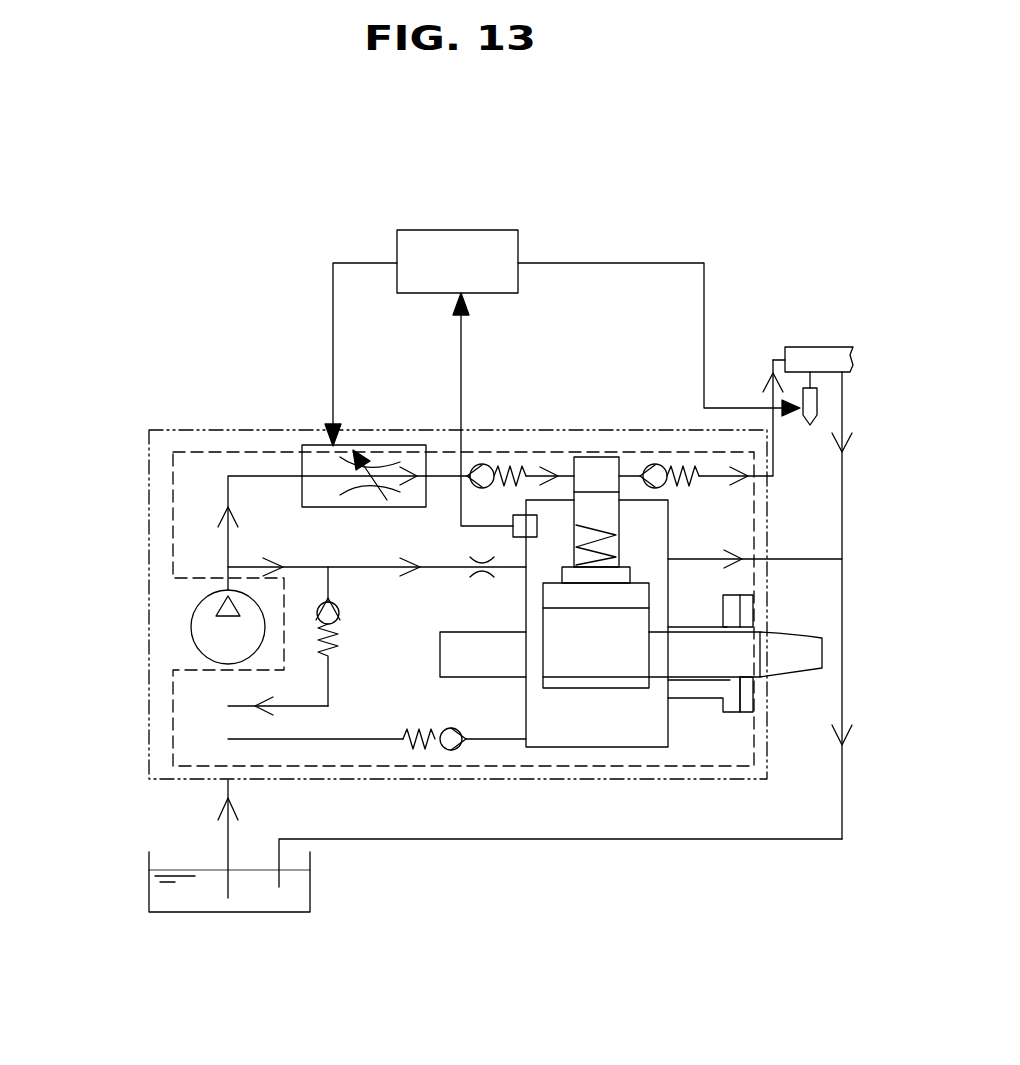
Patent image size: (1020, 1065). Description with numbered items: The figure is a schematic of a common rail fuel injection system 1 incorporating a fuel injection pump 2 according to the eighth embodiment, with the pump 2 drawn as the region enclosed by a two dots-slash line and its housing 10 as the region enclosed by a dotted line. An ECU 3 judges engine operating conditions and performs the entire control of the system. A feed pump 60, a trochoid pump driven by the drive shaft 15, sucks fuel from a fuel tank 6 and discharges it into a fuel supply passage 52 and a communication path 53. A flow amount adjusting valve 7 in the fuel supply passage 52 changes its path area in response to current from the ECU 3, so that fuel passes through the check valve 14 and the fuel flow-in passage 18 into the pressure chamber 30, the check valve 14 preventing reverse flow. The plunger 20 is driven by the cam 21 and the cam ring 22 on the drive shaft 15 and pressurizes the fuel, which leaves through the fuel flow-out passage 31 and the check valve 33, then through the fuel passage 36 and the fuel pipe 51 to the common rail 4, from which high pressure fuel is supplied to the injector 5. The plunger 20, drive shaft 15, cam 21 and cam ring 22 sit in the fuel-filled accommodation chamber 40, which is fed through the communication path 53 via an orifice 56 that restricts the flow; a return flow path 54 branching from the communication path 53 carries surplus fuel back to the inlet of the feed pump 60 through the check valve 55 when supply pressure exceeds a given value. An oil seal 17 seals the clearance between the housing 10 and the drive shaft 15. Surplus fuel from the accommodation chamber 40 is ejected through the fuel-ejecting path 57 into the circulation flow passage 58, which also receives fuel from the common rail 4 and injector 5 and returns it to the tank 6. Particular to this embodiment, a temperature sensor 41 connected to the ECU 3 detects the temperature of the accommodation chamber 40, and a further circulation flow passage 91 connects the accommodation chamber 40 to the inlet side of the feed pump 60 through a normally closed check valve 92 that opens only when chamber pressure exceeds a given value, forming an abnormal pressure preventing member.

The common rail fuel injection system 1 is at (272, 200).
The fuel injection pump 2 is at (166, 430).
The ECU 3 is at (451, 230).
The common rail 4 is at (812, 347).
The injector 5 is at (817, 402).
The fuel tank 6 is at (149, 876).
The flow amount adjusting valve 7 is at (361, 445).
The housing 10 is at (246, 452).
The check valve 14 is at (484, 463).
The drive shaft 15 is at (822, 650).
The oil seal 17 is at (748, 712).
The fuel flow-in passage 18 is at (441, 472).
The plunger 20 is at (585, 517).
The cam 21 is at (643, 618).
The cam ring 22 is at (612, 687).
The pressure chamber 30 is at (590, 462).
The fuel flow-out passage 31 is at (632, 462).
The check valve 33 is at (660, 462).
The fuel passage 36 is at (722, 460).
The accommodation chamber 40 is at (556, 718).
The temperature sensor 41 is at (512, 533).
The fuel pipe 51 is at (773, 462).
The fuel supply passage 52 is at (228, 477).
The communication path 53 is at (250, 562).
The return flow path 54 is at (328, 678).
The check valve 55 is at (340, 640).
The orifice 56 is at (472, 583).
The fuel-ejecting path 57 is at (700, 555).
The circulation flow passage 58 is at (650, 840).
The feed pump 60 is at (191, 628).
The circulation flow passage 91 is at (343, 742).
The check valve 92 is at (448, 750).